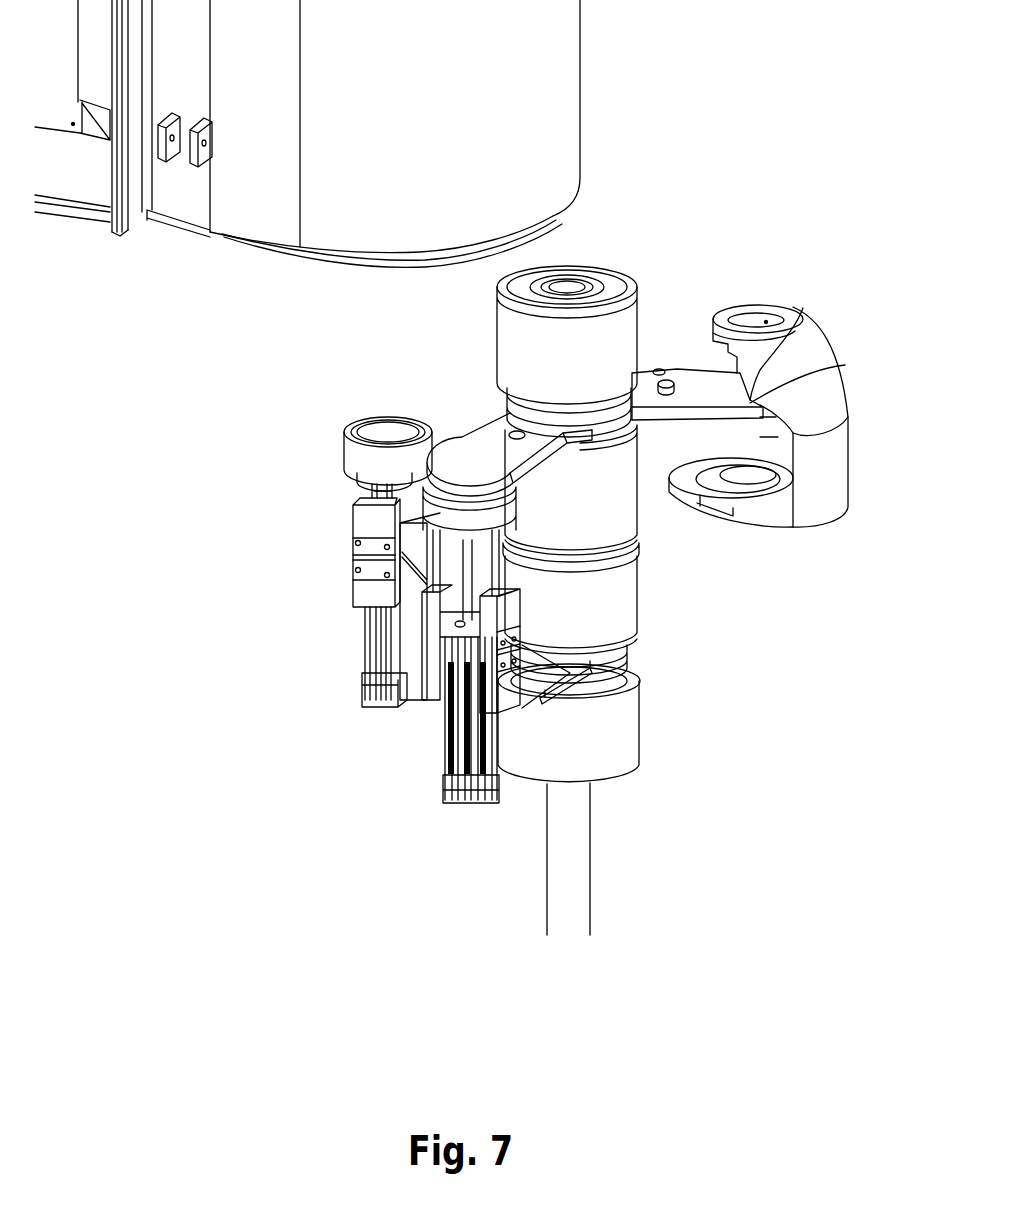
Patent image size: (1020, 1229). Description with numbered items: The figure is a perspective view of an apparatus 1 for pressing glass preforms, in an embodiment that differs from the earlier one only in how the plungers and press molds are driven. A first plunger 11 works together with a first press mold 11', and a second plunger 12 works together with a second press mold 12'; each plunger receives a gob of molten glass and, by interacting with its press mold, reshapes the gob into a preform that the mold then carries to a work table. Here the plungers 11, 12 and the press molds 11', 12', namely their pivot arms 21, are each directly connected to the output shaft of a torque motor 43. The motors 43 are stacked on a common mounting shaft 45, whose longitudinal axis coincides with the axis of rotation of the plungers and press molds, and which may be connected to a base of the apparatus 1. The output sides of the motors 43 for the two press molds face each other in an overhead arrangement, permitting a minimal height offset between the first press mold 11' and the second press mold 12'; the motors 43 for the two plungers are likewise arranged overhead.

The apparatus 1 is at (720, 743).
The first plunger 11 is at (391, 650).
The first press mold 11' is at (345, 602).
The second plunger 12 is at (309, 441).
The second press mold 12' is at (762, 376).
The pivot arm 21 is at (500, 435).
The torque motor 43 is at (611, 325).
The mounting shaft 45 is at (580, 855).